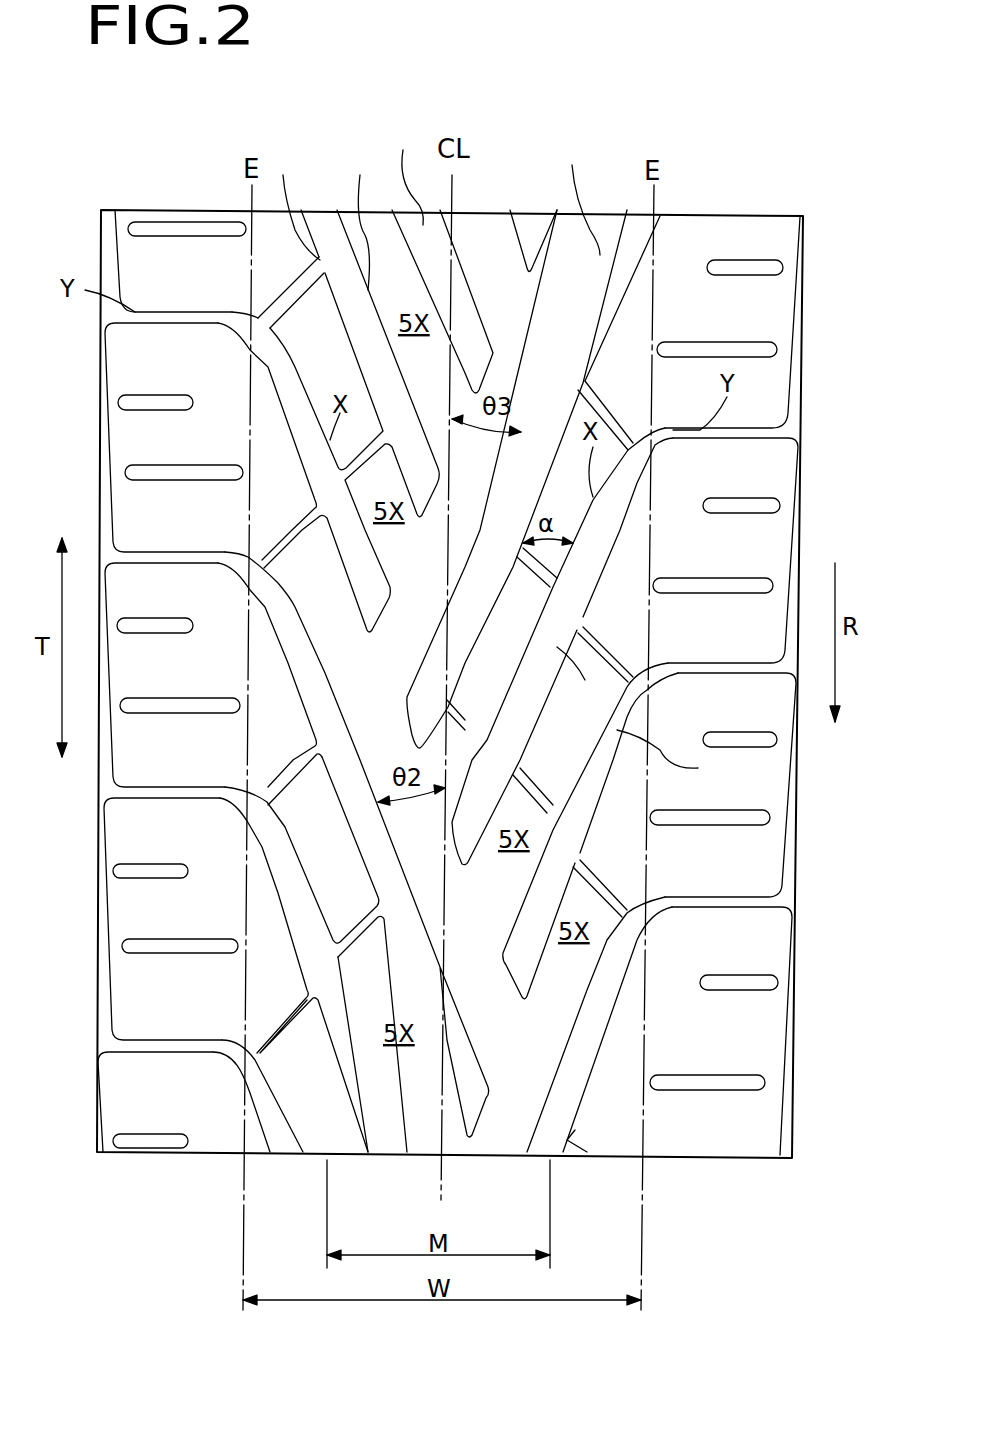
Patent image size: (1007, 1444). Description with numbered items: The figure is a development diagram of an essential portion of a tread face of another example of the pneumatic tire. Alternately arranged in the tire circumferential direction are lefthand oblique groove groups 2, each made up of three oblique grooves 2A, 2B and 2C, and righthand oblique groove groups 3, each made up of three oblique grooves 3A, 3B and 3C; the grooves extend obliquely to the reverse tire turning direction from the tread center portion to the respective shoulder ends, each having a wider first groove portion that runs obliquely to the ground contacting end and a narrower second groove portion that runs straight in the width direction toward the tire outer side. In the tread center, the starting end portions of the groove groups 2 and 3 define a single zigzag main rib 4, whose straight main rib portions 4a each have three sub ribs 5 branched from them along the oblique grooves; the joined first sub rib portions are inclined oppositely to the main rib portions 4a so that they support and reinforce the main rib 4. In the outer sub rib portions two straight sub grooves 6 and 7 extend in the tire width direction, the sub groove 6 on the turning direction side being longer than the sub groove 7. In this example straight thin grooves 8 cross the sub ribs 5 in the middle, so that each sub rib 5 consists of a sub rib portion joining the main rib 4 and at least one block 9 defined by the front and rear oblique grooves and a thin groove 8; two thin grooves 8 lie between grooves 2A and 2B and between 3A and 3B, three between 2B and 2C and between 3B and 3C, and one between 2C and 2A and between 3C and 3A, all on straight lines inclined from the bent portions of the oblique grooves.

The lefthand oblique groove group 2 is at (368, 638).
The oblique groove 2A is at (283, 1210).
The oblique groove 2B is at (275, 987).
The oblique groove 2C is at (327, 815).
The righthand oblique groove group 3 is at (610, 793).
The oblique groove 3A is at (677, 759).
The oblique groove 3B is at (576, 682).
The oblique groove 3C is at (610, 1103).
The main rib 4 is at (488, 1160).
The main rib portion 4a is at (487, 604).
The sub rib 5 is at (95, 822).
The sub groove 6 is at (150, 472).
The sub groove 7 is at (150, 403).
The thin groove 8 is at (293, 758).
The block 9 is at (472, 619).